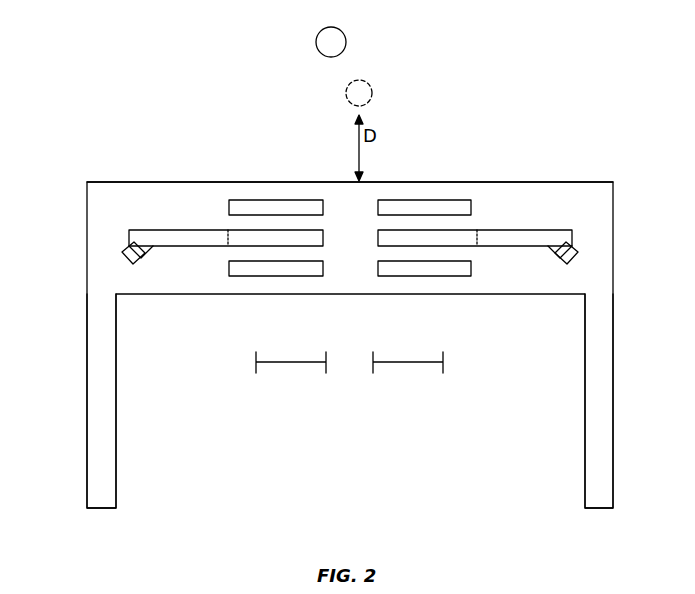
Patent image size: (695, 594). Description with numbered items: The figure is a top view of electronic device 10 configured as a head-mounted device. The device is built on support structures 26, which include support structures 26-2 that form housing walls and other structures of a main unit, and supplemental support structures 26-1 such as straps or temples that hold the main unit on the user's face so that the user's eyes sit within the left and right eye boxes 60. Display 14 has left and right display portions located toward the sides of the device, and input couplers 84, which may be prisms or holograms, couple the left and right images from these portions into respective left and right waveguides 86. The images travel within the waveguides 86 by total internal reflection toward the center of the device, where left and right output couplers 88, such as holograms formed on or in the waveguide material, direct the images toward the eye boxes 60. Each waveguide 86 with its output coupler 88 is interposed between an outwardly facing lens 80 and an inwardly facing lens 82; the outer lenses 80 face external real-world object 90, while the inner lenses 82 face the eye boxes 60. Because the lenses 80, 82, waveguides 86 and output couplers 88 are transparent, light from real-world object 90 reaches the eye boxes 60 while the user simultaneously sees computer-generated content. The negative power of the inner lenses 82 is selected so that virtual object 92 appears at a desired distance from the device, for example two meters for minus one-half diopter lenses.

The electronic device 10 is at (622, 125).
The display 14 is at (129, 259).
The support structures 26 is at (642, 182).
The supplemental support structures 26-1 is at (100, 433).
The main unit support structures 26-2 is at (100, 208).
The eye boxes 60 is at (256, 373).
The outer lenses 80 is at (229, 206).
The inner lenses 82 is at (282, 276).
The input couplers 84 is at (143, 251).
The waveguides 86 is at (142, 233).
The output couplers 88 is at (430, 182).
The real-world object 90 is at (346, 42).
The virtual object 92 is at (372, 92).